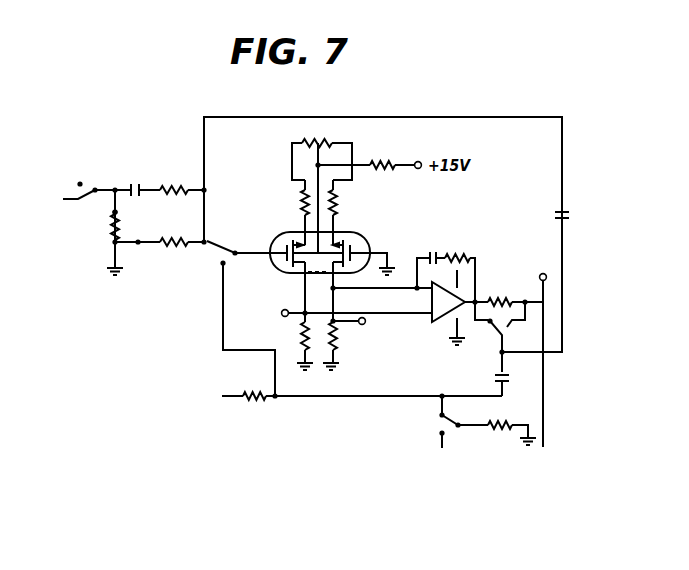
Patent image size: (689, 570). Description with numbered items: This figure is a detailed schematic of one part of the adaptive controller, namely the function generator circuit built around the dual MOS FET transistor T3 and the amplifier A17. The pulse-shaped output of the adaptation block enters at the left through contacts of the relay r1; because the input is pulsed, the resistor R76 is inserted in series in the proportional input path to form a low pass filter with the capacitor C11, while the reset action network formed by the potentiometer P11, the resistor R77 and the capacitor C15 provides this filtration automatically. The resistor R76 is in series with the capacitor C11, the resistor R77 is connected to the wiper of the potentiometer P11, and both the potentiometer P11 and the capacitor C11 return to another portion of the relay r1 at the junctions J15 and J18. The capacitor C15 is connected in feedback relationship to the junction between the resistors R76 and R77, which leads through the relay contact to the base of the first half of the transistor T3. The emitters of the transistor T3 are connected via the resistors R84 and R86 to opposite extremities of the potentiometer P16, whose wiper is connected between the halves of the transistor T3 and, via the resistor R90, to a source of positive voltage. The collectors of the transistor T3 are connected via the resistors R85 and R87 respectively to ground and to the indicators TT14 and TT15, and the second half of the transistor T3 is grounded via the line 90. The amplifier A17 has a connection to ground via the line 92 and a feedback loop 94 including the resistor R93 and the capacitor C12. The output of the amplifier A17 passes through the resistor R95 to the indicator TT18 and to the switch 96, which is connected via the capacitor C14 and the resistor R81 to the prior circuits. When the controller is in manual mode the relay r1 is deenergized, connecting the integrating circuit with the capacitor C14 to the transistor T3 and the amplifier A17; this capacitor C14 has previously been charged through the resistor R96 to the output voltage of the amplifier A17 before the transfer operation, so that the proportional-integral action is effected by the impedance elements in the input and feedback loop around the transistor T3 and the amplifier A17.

The relay r1 is at (275, 307).
The capacitor C11 is at (133, 182).
The resistor R76 is at (174, 185).
The junction J15 is at (113, 213).
The potentiometer P11 is at (112, 244).
The resistor R77 is at (173, 238).
The junction J18 is at (138, 244).
The potentiometer P16 is at (304, 142).
The resistor R84 is at (302, 200).
The resistor R86 is at (338, 200).
The resistor R90 is at (393, 156).
The dual MOS FET transistor T3 is at (320, 264).
The line 90 is at (389, 258).
The resistor R85 is at (302, 337).
The resistor R87 is at (337, 342).
The indicator TT14 is at (336, 315).
The indicator TT15 is at (366, 327).
The amplifier A17 is at (448, 306).
The line 92 is at (450, 332).
The capacitor C12 is at (432, 253).
The resistor R93 is at (463, 254).
The feedback loop 94 is at (472, 258).
The resistor R95 is at (501, 298).
The indicator TT18 is at (548, 263).
The switch 96 is at (506, 331).
The capacitor C14 is at (496, 378).
The capacitor C15 is at (567, 216).
The resistor R81 is at (263, 401).
The resistor R96 is at (497, 430).